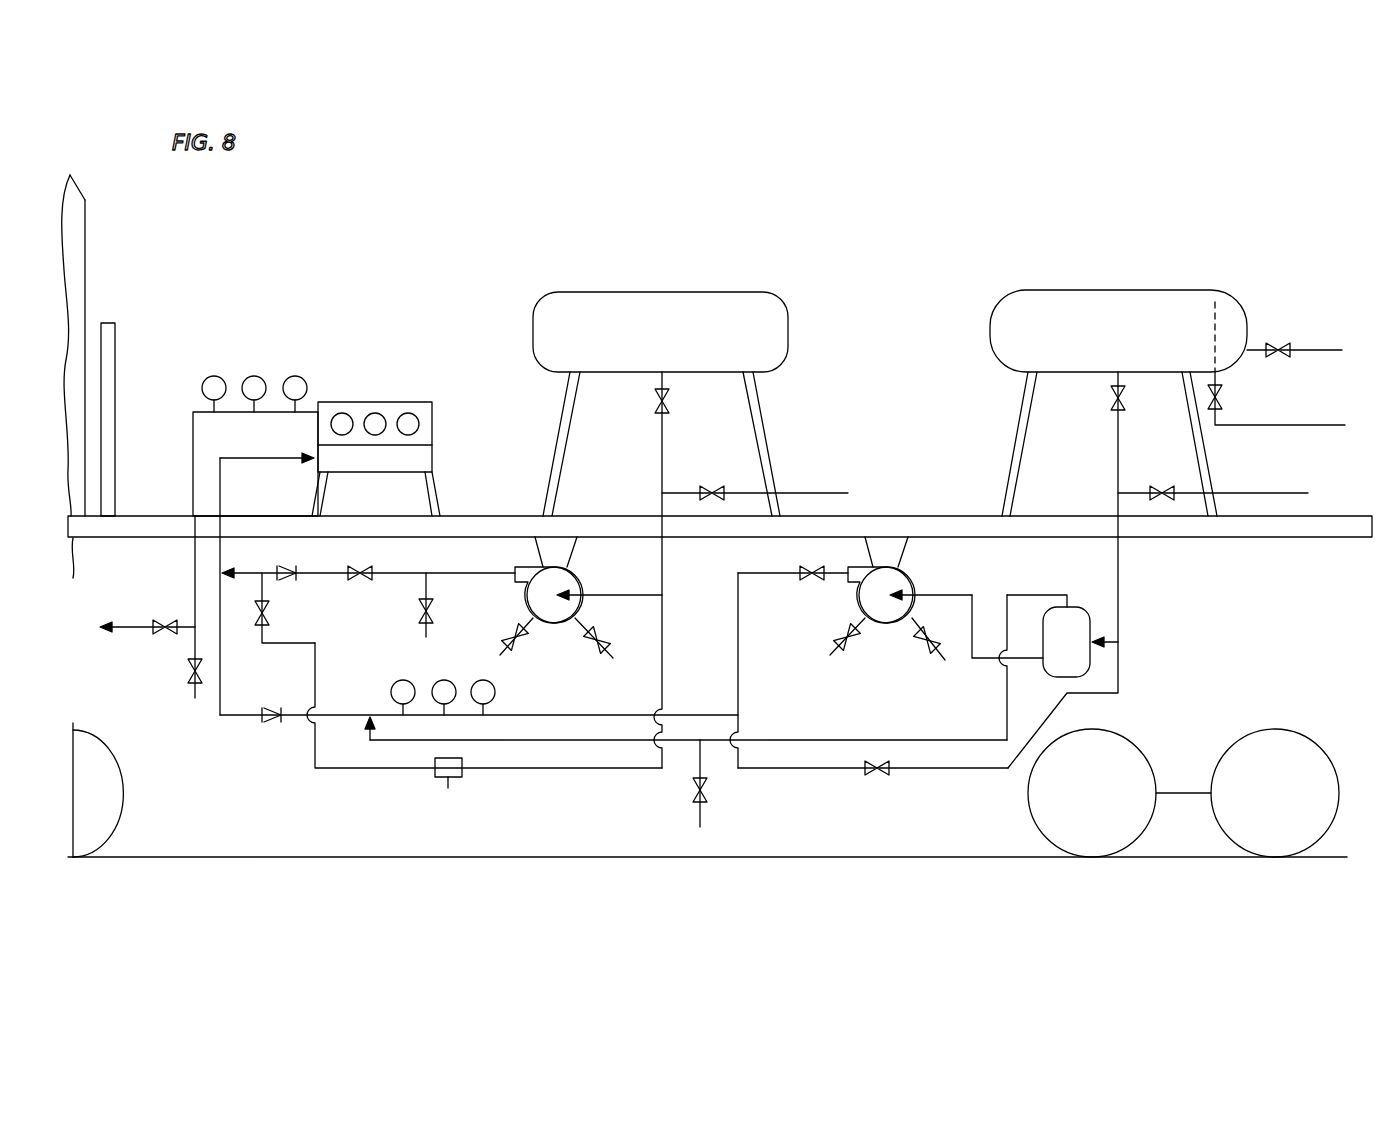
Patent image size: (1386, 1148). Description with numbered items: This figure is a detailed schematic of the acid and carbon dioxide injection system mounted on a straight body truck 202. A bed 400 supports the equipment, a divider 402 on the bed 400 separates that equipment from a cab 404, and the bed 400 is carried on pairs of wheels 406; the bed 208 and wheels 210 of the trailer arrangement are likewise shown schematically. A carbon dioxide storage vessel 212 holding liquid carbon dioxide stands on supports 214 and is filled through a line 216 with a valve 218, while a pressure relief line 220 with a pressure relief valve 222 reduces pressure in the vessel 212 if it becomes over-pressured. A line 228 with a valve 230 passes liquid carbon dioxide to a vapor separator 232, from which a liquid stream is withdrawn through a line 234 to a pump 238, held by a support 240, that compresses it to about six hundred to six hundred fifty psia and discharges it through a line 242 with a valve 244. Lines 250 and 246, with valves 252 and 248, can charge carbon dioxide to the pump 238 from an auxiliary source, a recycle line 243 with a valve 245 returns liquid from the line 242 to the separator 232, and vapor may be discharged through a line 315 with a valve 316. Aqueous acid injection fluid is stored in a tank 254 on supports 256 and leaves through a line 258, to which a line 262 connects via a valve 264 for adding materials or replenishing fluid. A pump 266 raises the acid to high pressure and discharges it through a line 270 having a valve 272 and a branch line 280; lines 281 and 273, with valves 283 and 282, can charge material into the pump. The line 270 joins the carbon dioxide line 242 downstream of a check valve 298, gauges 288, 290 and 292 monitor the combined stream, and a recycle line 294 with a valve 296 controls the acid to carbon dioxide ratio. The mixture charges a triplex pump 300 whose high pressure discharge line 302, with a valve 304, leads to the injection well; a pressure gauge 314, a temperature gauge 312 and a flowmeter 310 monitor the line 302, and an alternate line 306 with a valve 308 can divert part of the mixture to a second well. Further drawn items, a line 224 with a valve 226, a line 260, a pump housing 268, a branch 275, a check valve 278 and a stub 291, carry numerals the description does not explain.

The truck 202 is at (430, 794).
The bed 208 is at (481, 516).
The wheels 210 is at (1215, 808).
The carbon dioxide storage vessel 212 is at (1160, 290).
The supports 214 is at (1010, 440).
The line 216 is at (1305, 350).
The valve 218 is at (1280, 343).
The pressure relief line 220 is at (1305, 425).
The pressure relief valve 222 is at (1222, 398).
The drain line 224 is at (1280, 493).
The drain valve 226 is at (1162, 486).
The line 228 is at (1118, 605).
The valve 230 is at (1111, 402).
The vapor separator 232 is at (1078, 610).
The line 234 is at (972, 598).
The pump 238 is at (885, 625).
The support 240 is at (905, 567).
The line 242 is at (738, 598).
The recycle line 243 is at (800, 768).
The valve 244 is at (810, 580).
The valve 245 is at (880, 775).
The line 246 is at (945, 660).
The valve 248 is at (920, 645).
The line 250 is at (832, 655).
The valve 252 is at (840, 632).
The tank 254 is at (705, 292).
The supports 256 is at (560, 405).
The line 258 is at (669, 392).
The injection fluid supply line 260 is at (660, 408).
The line 262 is at (805, 493).
The valve 264 is at (712, 486).
The pump 266 is at (555, 625).
The injection fluid pump 268 is at (575, 567).
The line 270 is at (455, 573).
The valve 272 is at (356, 580).
The line 273 is at (500, 650).
The pump bleed line 275 is at (508, 628).
The check valve 278 is at (287, 566).
The line 280 is at (426, 590).
The line 281 is at (610, 658).
The valve 282 is at (420, 620).
The valve 283 is at (590, 645).
The gauge 288 is at (391, 692).
The gauge 290 is at (440, 680).
The branch outlet 291 is at (424, 636).
The gauge 292 is at (495, 692).
The recycle line 294 is at (320, 768).
The valve 296 is at (269, 620).
The check valve 298 is at (272, 708).
The triplex pump 300 is at (362, 402).
The line 302 is at (193, 430).
The valve 304 is at (188, 681).
The alternate line 306 is at (130, 627).
The valve 308 is at (165, 634).
The flowmeter 310 is at (305, 380).
The temperature gauge 312 is at (258, 377).
The pressure gauge 314 is at (206, 378).
The line 315 is at (705, 815).
The valve 316 is at (693, 790).
The bed 400 is at (134, 499).
The divider 402 is at (115, 330).
The cab 404 is at (82, 200).
The wheels 406 is at (115, 805).